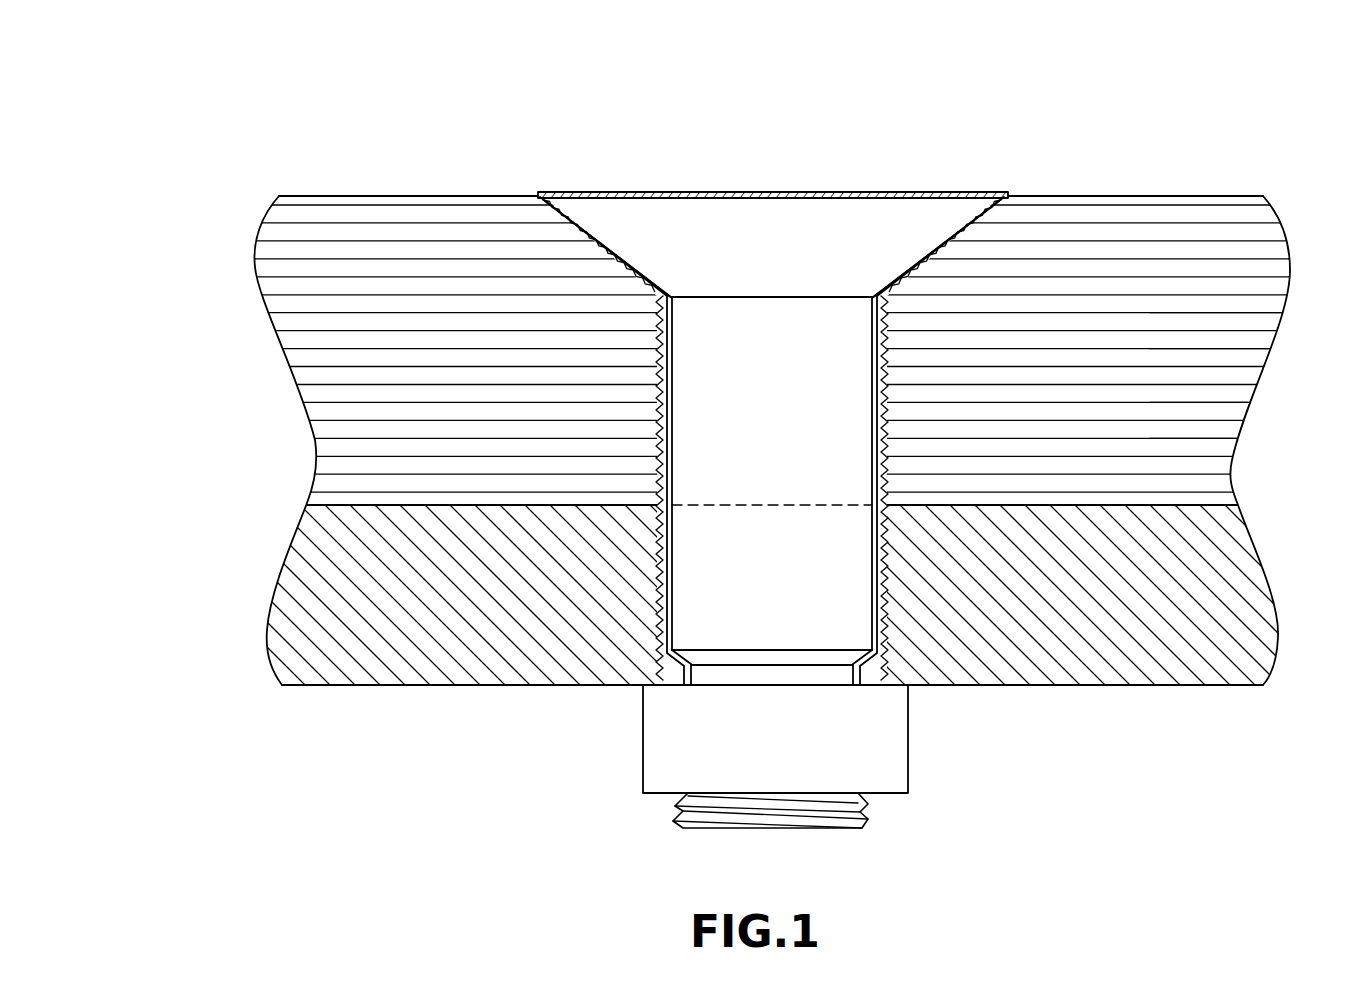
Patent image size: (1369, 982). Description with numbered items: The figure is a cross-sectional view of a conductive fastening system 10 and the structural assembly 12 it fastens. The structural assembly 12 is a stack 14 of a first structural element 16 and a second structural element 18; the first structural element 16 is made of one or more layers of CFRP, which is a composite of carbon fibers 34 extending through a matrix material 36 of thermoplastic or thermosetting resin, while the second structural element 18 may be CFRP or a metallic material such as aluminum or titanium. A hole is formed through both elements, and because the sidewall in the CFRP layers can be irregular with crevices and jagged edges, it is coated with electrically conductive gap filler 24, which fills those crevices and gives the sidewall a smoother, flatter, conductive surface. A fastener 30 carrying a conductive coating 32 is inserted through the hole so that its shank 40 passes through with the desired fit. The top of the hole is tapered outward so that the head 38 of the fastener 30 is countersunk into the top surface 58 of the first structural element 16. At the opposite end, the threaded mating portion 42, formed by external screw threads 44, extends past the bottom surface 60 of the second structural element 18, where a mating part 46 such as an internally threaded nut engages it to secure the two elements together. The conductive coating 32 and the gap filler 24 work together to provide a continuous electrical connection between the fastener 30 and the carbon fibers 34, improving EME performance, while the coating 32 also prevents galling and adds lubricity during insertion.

The conductive fastening system 10 is at (722, 472).
The structural assembly 12 is at (334, 190).
The stack 14 is at (722, 415).
The first structural element 16 is at (1257, 237).
The second structural element 18 is at (1227, 618).
The electrically conductive gap filler 24 is at (993, 193).
The fastener 30 is at (746, 173).
The conductive coating 32 is at (962, 217).
The carbon fibers 34 is at (1246, 342).
The matrix material 36 is at (1217, 432).
The head 38 is at (812, 222).
The shank 40 is at (753, 419).
The threaded mating portion 42 is at (832, 827).
The external screw threads 44 is at (712, 812).
The mating part 46 is at (658, 740).
The top surface 58 is at (1080, 195).
The bottom surface 60 is at (1173, 685).